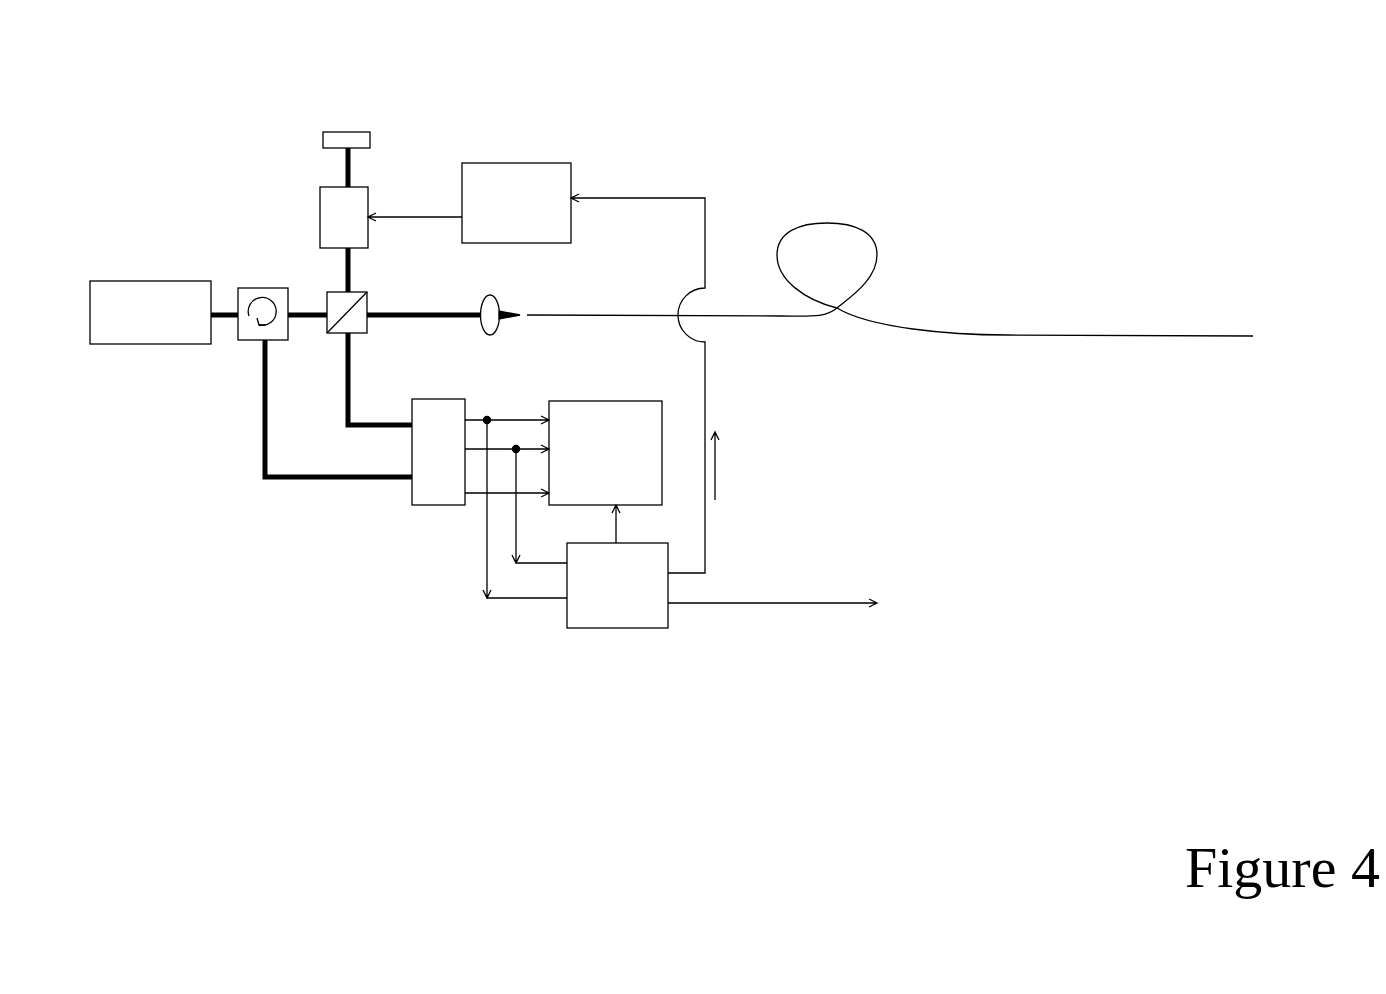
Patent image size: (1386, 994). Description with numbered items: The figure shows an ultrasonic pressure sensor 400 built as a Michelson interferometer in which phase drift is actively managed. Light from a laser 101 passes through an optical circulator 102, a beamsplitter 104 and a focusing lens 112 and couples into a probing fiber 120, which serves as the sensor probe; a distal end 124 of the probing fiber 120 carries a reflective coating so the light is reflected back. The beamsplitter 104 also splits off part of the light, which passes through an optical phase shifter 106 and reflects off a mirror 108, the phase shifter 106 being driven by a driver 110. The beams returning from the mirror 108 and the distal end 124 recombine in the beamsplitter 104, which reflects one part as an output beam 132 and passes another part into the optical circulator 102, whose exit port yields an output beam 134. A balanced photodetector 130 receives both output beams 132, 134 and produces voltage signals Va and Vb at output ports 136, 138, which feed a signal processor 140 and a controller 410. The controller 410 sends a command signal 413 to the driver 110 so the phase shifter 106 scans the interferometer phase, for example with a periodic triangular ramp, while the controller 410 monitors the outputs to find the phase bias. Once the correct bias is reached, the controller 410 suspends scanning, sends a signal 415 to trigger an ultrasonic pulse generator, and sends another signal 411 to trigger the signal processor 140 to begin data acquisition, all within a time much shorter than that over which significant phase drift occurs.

The ultrasonic pressure sensor 400 is at (673, 90).
The laser 101 is at (150, 312).
The optical circulator 102 is at (261, 296).
The beamsplitter 104 is at (369, 300).
The optical phase shifter 106 is at (344, 220).
The mirror 108 is at (345, 123).
The driver 110 is at (469, 203).
The focusing lens 112 is at (488, 299).
The probing fiber 120 is at (827, 249).
The distal end 124 is at (895, 315).
The balanced photodetector 130 is at (480, 452).
The output beam 132 is at (380, 379).
The output beam 134 is at (338, 408).
The output port 136 is at (516, 495).
The output port 138 is at (516, 492).
The signal processor 140 is at (605, 453).
The controller 410 is at (617, 585).
The signal 411 is at (632, 524).
The command signal 413 is at (665, 383).
The signal 415 is at (772, 585).